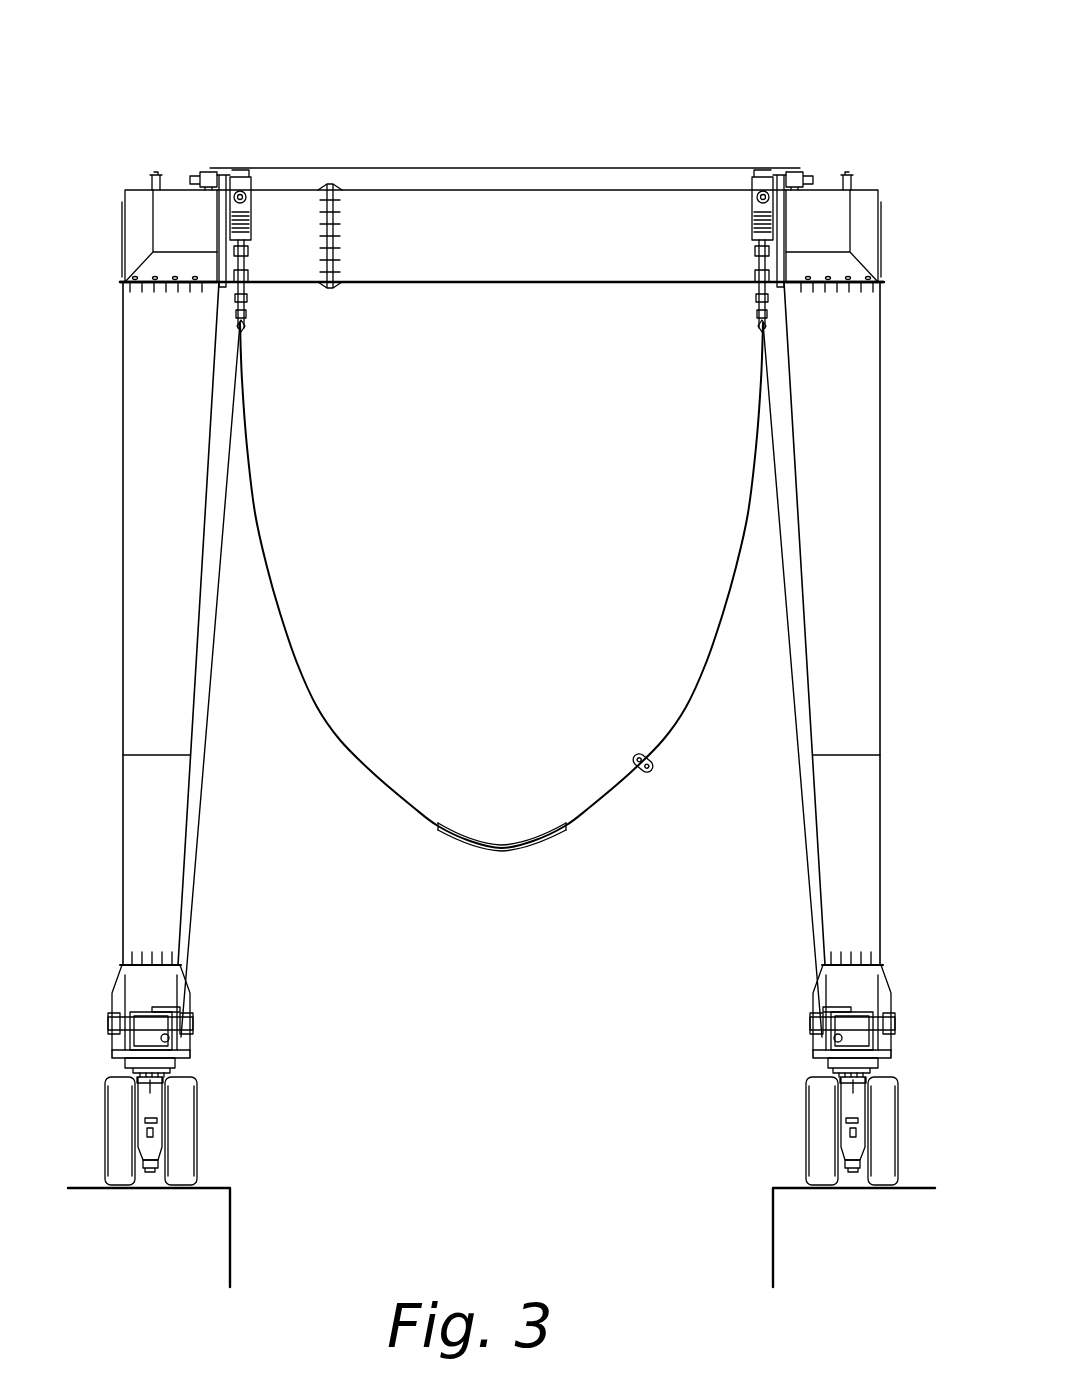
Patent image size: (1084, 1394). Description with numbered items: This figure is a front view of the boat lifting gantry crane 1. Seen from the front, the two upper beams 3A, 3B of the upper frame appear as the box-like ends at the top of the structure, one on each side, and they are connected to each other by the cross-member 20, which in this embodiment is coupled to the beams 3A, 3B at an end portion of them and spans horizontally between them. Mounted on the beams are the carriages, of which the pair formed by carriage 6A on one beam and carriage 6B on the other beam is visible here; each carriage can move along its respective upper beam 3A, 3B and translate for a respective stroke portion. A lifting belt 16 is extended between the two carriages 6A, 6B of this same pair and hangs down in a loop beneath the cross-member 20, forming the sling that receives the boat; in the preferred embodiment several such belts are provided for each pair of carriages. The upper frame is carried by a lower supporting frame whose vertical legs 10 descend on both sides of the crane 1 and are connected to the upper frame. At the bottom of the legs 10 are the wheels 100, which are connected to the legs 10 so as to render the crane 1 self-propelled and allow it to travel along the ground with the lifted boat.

The crane 1 is at (656, 126).
The upper beam 3A is at (829, 216).
The upper beam 3B is at (182, 222).
The carriage 6A is at (757, 230).
The carriage 6B is at (250, 235).
The vertical legs 10 is at (165, 877).
The lifting belt 16 is at (462, 848).
The cross-member 20 is at (519, 238).
The wheels 100 is at (183, 1136).